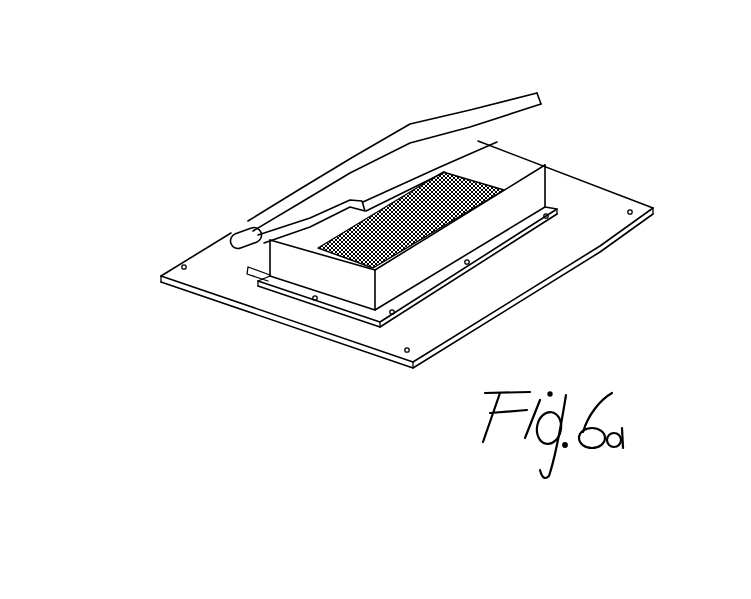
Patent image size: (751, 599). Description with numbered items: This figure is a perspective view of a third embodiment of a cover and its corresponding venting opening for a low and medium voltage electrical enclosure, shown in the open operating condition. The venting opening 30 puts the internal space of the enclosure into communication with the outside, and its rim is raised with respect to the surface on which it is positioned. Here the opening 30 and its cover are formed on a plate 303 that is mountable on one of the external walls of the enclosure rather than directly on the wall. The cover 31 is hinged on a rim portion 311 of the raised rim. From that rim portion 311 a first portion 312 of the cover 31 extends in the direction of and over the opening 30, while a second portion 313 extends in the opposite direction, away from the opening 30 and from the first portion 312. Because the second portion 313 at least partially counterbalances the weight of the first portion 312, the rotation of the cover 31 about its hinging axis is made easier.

The venting opening 30 is at (491, 179).
The cover 31 is at (345, 193).
The rim portion 311 is at (266, 244).
The first portion 312 is at (512, 100).
The second portion 313 is at (244, 228).
The plate 303 is at (608, 219).